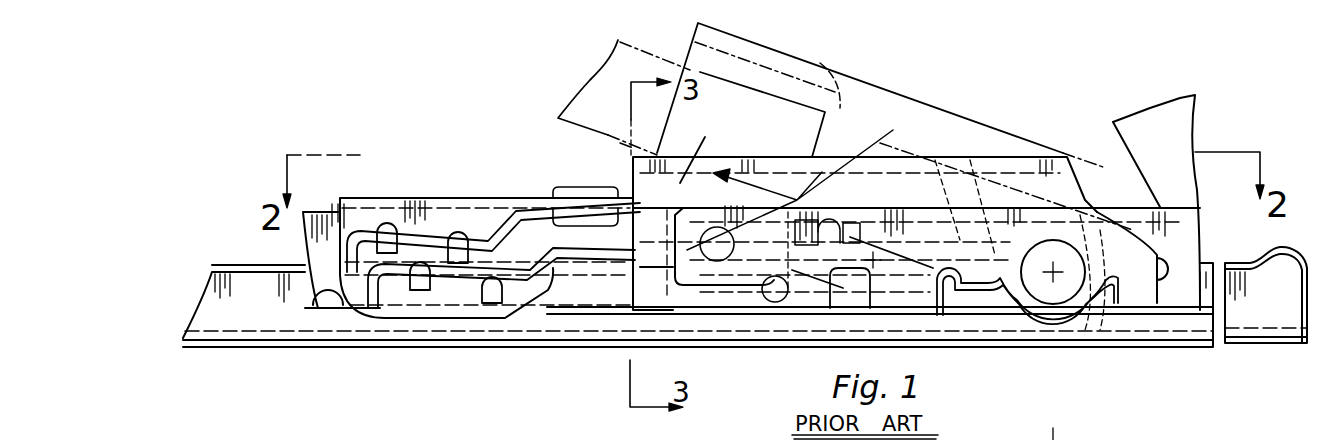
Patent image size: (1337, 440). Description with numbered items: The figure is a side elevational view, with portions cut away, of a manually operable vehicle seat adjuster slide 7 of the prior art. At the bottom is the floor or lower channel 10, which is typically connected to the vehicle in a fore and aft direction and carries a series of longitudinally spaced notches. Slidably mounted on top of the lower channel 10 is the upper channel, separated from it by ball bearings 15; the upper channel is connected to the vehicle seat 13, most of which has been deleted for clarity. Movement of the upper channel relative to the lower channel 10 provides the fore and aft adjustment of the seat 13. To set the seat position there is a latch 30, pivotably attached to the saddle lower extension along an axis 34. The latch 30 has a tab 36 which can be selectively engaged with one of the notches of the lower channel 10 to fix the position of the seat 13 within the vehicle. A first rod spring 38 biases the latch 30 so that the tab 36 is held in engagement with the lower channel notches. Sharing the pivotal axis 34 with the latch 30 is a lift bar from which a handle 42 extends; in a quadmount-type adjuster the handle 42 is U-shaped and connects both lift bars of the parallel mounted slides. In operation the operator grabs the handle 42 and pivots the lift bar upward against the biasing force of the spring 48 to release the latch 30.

The seat adjuster slide 7 is at (392, 168).
The lower channel 10 is at (253, 323).
The vehicle seat 13 is at (1170, 120).
The ball bearings 15 is at (326, 310).
The latch 30 is at (905, 160).
The axis 34 is at (1052, 282).
The tab 36 is at (640, 290).
The first rod spring 38 is at (500, 228).
The handle 42 is at (604, 78).
The spring 48 is at (457, 284).